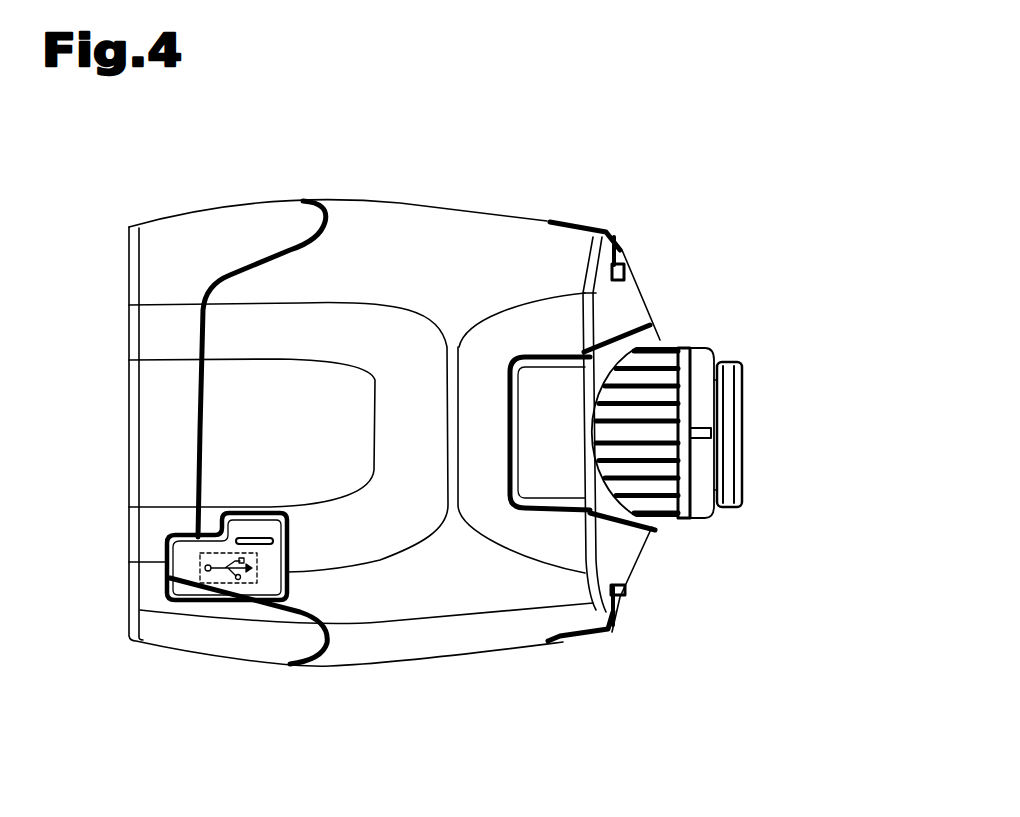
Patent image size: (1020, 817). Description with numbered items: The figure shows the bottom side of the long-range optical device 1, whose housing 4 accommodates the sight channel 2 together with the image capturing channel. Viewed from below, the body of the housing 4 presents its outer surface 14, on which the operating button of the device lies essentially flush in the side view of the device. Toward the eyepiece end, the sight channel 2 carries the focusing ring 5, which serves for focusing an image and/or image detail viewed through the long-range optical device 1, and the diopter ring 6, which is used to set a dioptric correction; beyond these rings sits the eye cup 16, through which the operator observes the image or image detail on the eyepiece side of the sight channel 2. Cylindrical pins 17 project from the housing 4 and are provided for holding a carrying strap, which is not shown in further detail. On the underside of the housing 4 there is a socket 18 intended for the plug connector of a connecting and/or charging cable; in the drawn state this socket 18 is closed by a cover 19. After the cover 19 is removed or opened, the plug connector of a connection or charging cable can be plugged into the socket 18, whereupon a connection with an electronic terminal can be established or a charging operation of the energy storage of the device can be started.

The long-range optical device 1 is at (803, 157).
The sight channel 2 is at (763, 446).
The housing 4 is at (398, 236).
The focusing ring 5 is at (649, 343).
The diopter ring 6 is at (708, 347).
The surface 14 is at (474, 252).
The eye cup 16 is at (744, 368).
The cylindrical pins 17 is at (614, 223).
The socket 18 is at (248, 576).
The cover 19 is at (192, 577).